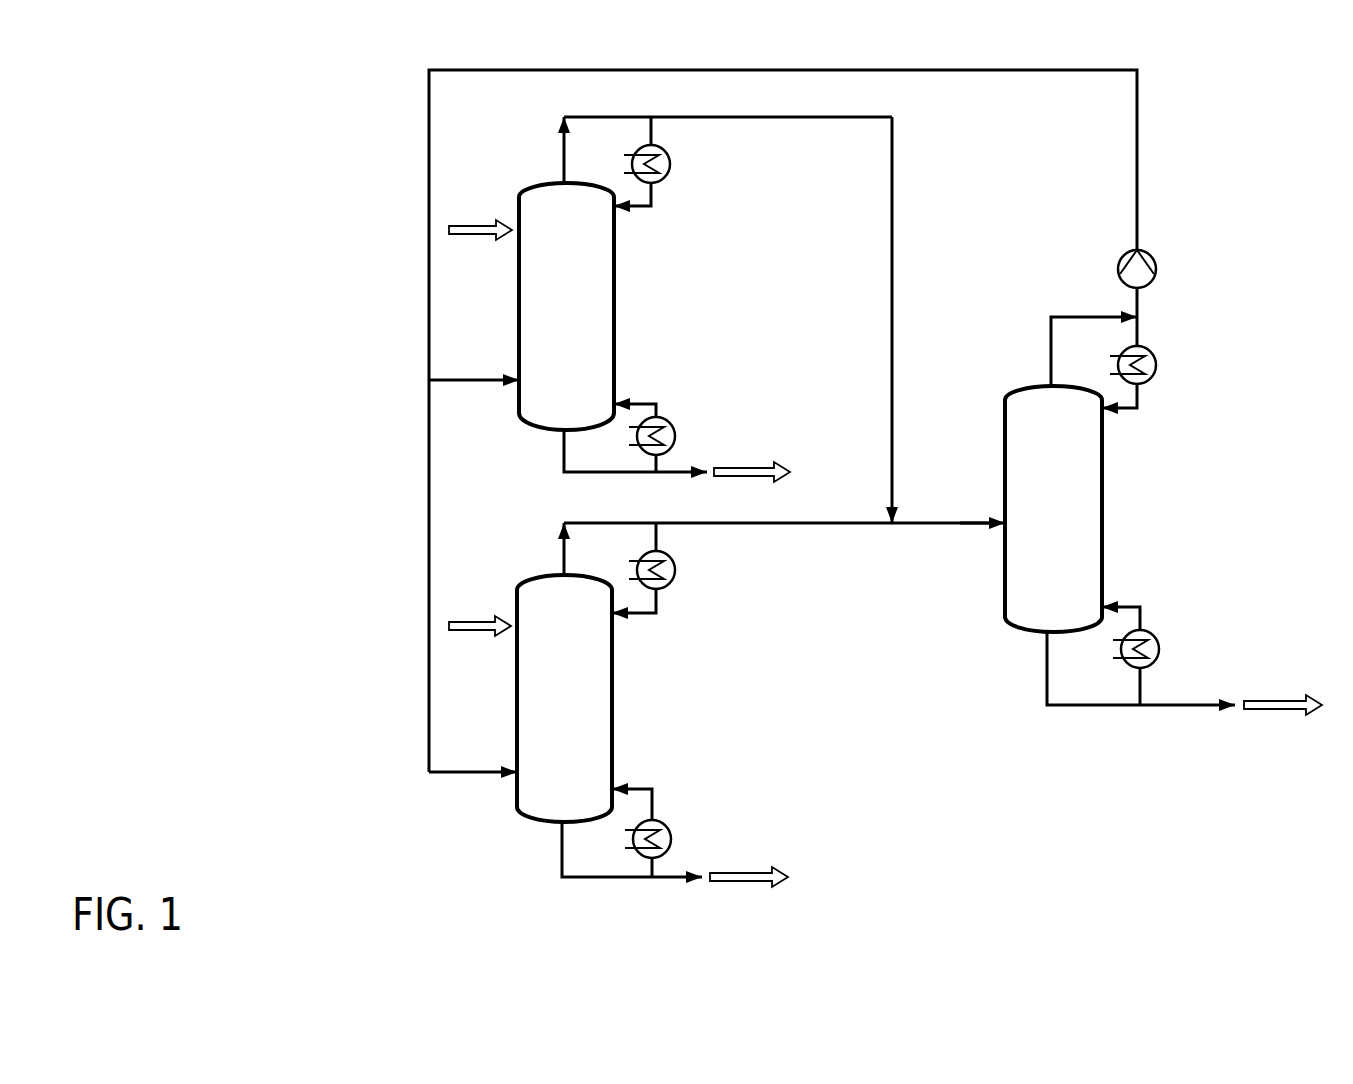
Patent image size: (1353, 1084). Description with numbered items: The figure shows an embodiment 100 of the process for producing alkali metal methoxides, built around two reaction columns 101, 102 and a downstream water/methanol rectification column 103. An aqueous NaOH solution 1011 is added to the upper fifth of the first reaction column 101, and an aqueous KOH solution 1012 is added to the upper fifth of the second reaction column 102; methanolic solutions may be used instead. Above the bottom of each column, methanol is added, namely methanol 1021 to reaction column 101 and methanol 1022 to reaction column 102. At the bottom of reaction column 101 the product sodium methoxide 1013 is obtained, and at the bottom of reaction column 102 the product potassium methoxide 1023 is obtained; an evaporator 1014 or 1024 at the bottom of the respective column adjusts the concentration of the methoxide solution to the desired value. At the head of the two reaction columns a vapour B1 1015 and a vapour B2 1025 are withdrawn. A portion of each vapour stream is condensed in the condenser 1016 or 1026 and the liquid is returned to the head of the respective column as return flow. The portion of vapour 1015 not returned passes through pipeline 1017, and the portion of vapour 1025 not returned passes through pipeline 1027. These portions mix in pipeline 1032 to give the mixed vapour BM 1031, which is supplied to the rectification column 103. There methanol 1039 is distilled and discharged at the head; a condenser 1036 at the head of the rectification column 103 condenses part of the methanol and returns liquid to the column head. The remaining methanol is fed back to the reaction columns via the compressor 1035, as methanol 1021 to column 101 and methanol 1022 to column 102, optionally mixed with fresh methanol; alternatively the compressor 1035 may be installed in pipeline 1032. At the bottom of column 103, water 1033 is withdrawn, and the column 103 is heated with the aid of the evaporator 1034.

The embodiment 100 is at (393, 417).
The reaction column 101 is at (625, 288).
The aqueous NaOH solution 1011 is at (478, 217).
The sodium methoxide 1013 is at (680, 467).
The evaporator 1014 is at (681, 427).
The vapour B1 1015 is at (549, 150).
The condenser 1016 is at (682, 172).
The pipeline 1017 is at (848, 320).
The methanol 1021 is at (474, 396).
The reaction column 102 is at (628, 690).
The aqueous KOH solution 1012 is at (476, 614).
The methanol 1022 is at (473, 790).
The potassium methoxide 1023 is at (677, 868).
The evaporator 1024 is at (684, 839).
The vapour B2 1025 is at (553, 543).
The condenser 1026 is at (681, 568).
The pipeline 1027 is at (728, 538).
The rectification column 103 is at (1125, 523).
The mixed vapour BM 1031 is at (972, 513).
The pipeline 1032 is at (948, 538).
The water 1033 is at (1188, 687).
The evaporator 1034 is at (1168, 649).
The compressor 1035 is at (1168, 268).
The condenser 1036 is at (1170, 366).
The methanol 1039 is at (1093, 336).